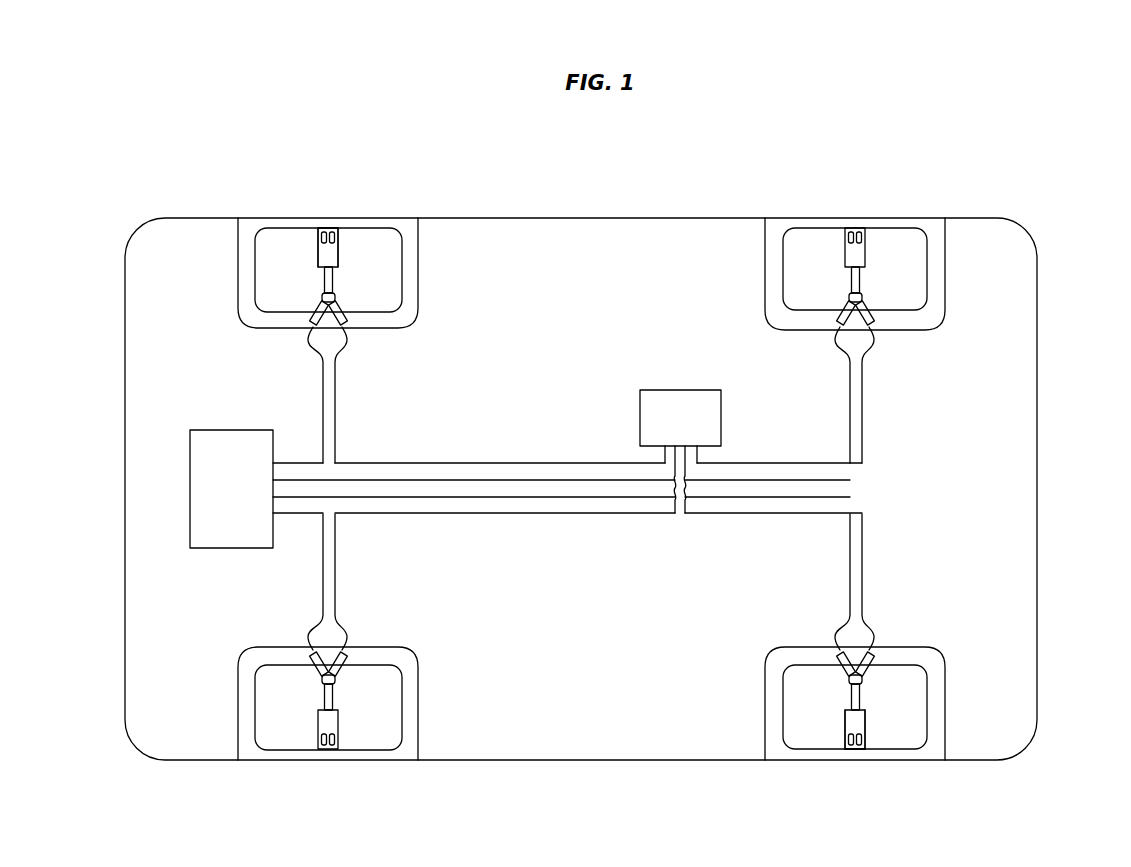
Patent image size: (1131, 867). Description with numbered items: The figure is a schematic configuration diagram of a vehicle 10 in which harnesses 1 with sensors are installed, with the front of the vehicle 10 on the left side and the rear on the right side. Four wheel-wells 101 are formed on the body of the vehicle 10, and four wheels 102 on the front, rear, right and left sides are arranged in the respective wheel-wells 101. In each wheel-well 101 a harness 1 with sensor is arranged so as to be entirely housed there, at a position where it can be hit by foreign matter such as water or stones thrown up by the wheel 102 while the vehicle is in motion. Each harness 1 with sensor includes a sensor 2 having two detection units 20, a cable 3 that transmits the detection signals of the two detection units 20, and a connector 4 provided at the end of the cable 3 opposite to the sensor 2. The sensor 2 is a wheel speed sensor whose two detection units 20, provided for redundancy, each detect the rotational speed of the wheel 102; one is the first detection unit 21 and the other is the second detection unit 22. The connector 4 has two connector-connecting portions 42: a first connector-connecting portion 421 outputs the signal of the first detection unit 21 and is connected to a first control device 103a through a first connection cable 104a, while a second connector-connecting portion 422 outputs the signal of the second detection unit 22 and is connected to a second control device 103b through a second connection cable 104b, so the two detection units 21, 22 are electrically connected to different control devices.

The vehicle 10 is at (1069, 171).
The harness with sensor 1 is at (588, 490).
The sensor 2 is at (338, 250).
The cable 3 is at (333, 278).
The connector 4 is at (588, 490).
The detection unit 20 is at (591, 490).
The first detection unit 21 is at (318, 226).
The second detection unit 22 is at (338, 226).
The connector-connecting portion 42 is at (588, 488).
The first connector-connecting portion 421 is at (307, 314).
The second connector-connecting portion 422 is at (954, 639).
The wheel-well 101 is at (249, 238).
The wheel 102 is at (390, 230).
The first control device 103a is at (230, 550).
The second control device 103b is at (680, 388).
The first connection cable 104a is at (322, 400).
The second connection cable 104b is at (337, 392).